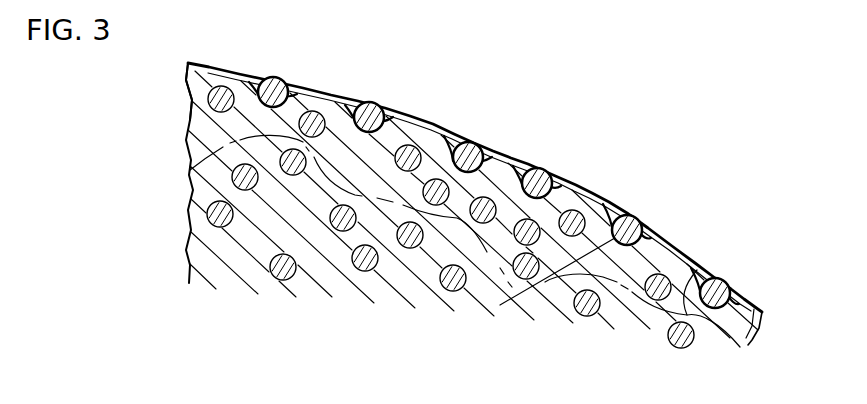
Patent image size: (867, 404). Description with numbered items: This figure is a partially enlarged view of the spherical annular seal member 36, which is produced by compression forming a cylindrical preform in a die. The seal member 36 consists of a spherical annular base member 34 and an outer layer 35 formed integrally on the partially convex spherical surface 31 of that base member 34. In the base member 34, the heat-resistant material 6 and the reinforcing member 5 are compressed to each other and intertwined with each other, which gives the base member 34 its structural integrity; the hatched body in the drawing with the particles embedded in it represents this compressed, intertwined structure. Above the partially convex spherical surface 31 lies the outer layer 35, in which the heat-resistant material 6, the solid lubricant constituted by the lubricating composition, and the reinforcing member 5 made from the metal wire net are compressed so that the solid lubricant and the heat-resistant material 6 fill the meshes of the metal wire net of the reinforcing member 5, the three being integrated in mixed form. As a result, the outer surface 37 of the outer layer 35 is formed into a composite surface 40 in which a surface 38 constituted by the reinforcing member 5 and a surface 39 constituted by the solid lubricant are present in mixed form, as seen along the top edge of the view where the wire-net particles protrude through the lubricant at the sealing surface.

The reinforcing member 5 is at (367, 103).
The heat-resistant material 6 is at (287, 85).
The partially convex spherical surface 31 is at (704, 265).
The spherical annular base member 34 is at (203, 192).
The outer layer 35 is at (616, 210).
The spherical annular seal member 36 is at (497, 140).
The outer surface 37 is at (203, 63).
The surface constituted by the reinforcing member 38 is at (543, 170).
The surface constituted by the solid lubricant 39 is at (438, 123).
The composite surface 40 is at (322, 90).